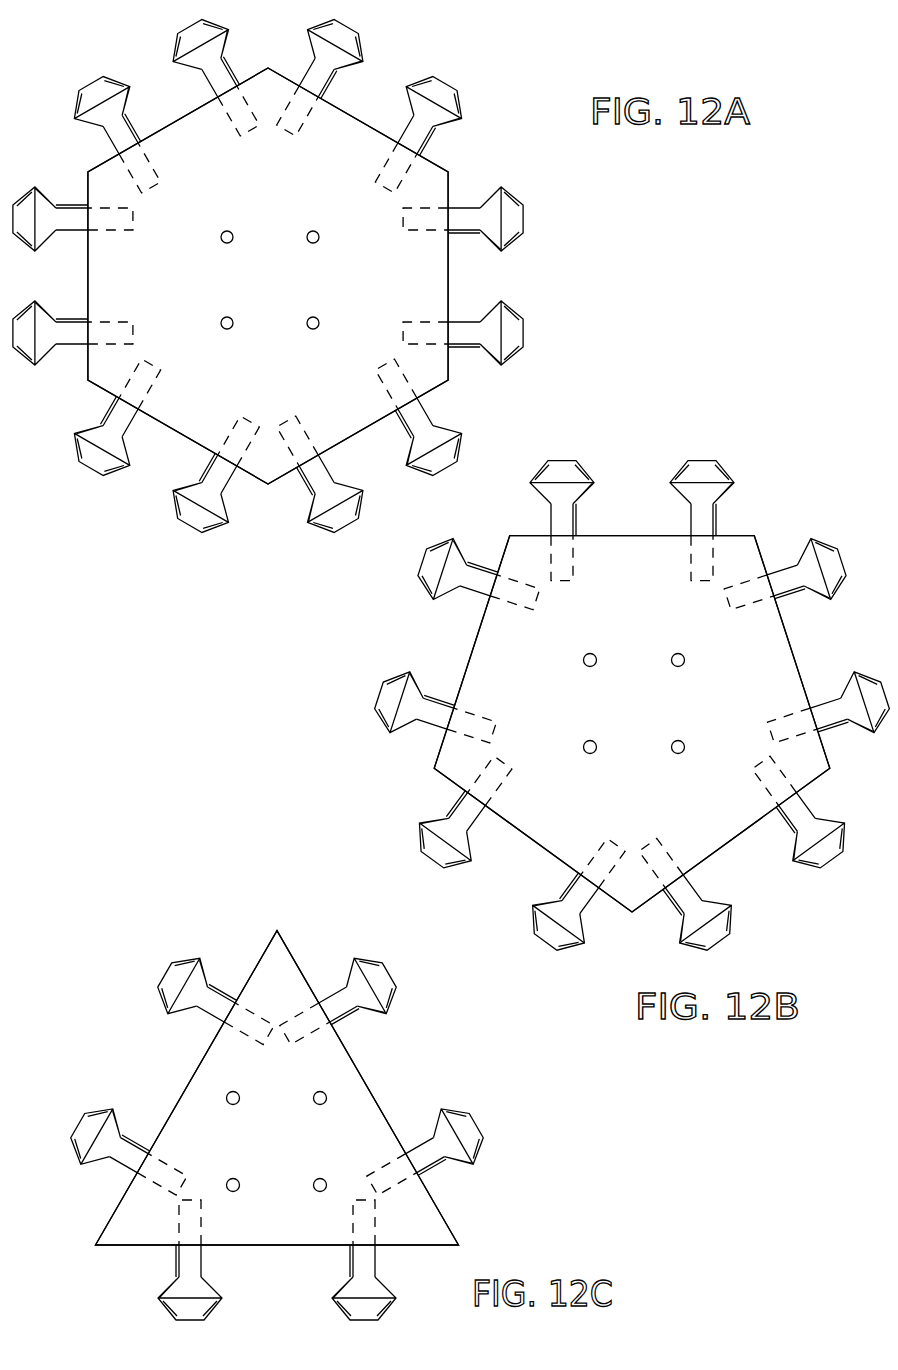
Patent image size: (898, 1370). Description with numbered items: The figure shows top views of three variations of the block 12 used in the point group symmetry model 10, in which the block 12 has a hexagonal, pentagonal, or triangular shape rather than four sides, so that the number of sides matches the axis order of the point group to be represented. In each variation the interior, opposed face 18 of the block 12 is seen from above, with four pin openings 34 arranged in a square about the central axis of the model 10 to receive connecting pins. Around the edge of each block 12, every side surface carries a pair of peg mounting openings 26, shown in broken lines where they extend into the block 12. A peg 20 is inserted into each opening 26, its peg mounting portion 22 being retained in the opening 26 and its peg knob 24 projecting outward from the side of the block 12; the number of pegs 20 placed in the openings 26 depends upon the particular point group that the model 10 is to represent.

In FIG. 12A, the point group symmetry model 10 is at (305, 275).
In FIG. 12B, the point group symmetry model 10 is at (625, 700).
In FIG. 12C, the point group symmetry model 10 is at (277, 1112).
In FIG. 12A, the block 12 is at (268, 66).
In FIG. 12B, the block 12 is at (759, 537).
In FIG. 12C, the block 12 is at (279, 930).
In FIG. 12A, the interior opposed face 18 is at (198, 394).
In FIG. 12B, the interior opposed face 18 is at (630, 547).
In FIG. 12C, the interior opposed face 18 is at (277, 1220).
In FIG. 12A, the peg 20 is at (307, 315).
In FIG. 12B, the peg 20 is at (607, 603).
In FIG. 12C, the peg 20 is at (283, 1165).
In FIG. 12A, the peg mounting portion 22 is at (463, 346).
In FIG. 12B, the peg mounting portion 22 is at (479, 579).
In FIG. 12C, the peg mounting portion 22 is at (188, 1261).
In FIG. 12A, the peg knob 24 is at (538, 328).
In FIG. 12B, the peg knob 24 is at (405, 583).
In FIG. 12C, the peg knob 24 is at (158, 1310).
In FIG. 12A, the peg mounting opening 26 is at (386, 385).
In FIG. 12B, the peg mounting opening 26 is at (765, 783).
In FIG. 12C, the peg mounting opening 26 is at (173, 1167).
In FIG. 12A, the pin opening 34 is at (307, 231).
In FIG. 12B, the pin opening 34 is at (673, 655).
In FIG. 12C, the pin opening 34 is at (315, 1103).